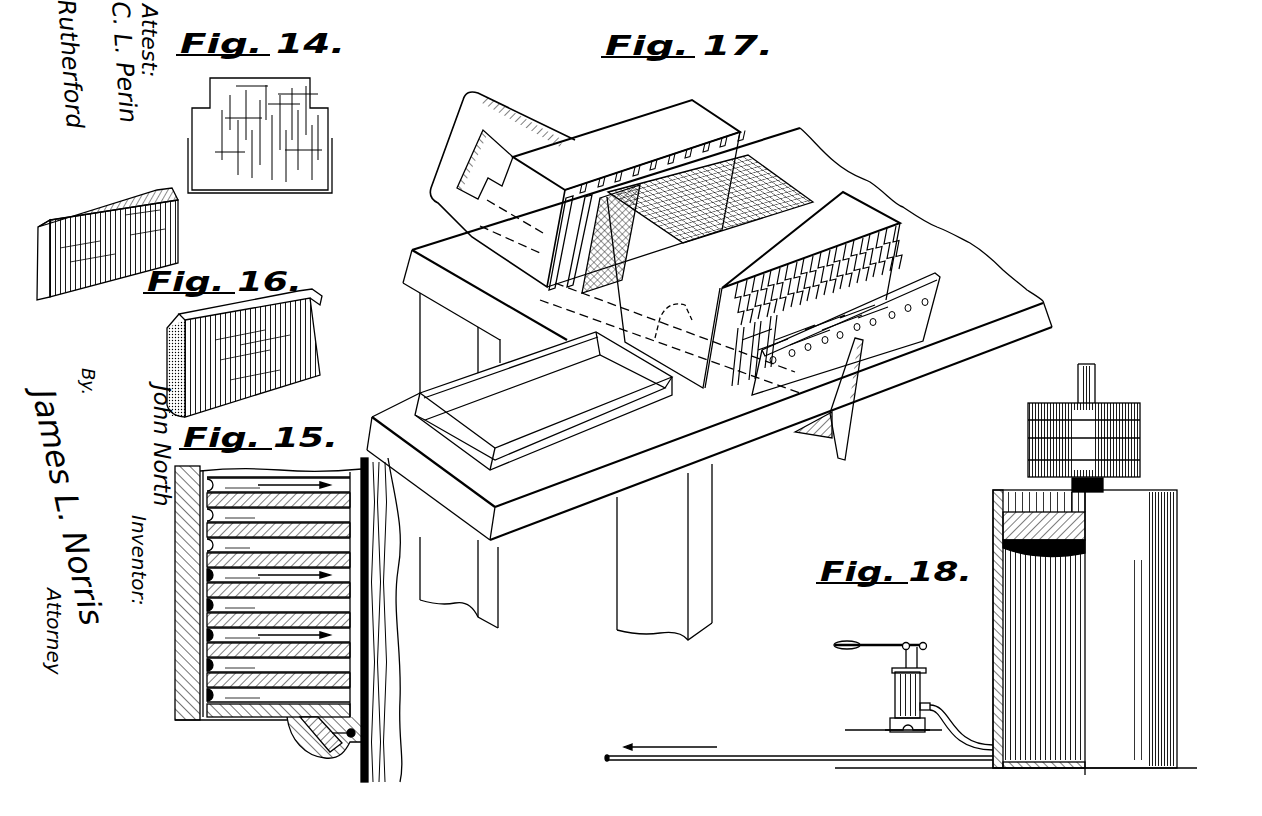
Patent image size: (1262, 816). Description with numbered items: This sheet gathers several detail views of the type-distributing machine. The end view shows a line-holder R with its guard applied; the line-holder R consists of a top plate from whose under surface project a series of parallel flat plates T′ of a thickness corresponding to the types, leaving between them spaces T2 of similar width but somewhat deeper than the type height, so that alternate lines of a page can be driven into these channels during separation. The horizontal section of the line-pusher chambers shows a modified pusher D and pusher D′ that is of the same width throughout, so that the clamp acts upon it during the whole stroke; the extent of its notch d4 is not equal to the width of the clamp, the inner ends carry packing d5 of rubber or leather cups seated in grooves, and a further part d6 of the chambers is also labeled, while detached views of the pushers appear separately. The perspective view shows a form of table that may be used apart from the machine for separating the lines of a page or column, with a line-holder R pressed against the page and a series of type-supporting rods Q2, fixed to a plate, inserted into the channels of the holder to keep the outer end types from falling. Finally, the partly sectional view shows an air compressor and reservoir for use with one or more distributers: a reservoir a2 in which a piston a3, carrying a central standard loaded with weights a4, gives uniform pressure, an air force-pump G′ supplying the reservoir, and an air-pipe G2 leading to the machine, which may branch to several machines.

In FIG. 14, the line-holder R is at (260, 127).
In FIG. 17, the line-holder R is at (706, 244).
In FIG. 14, the parallel flat plates T′ is at (241, 89).
In FIG. 17, the parallel flat plates T′ is at (502, 189).
In FIG. 17, the spaces T2 is at (742, 136).
In FIG. 16, the pusher D is at (244, 353).
In FIG. 14, the pusher D′ is at (107, 244).
In FIG. 15, the pusher D′ is at (278, 591).
In FIG. 14, the notch d4 is at (172, 189).
In FIG. 16, the notch d4 is at (330, 291).
In FIG. 15, the notch d4 is at (361, 577).
In FIG. 16, the packing d5 is at (159, 310).
In FIG. 15, the packing d5 is at (361, 483).
In FIG. 15, the air passage d6 is at (361, 662).
In FIG. 17, the type-supporting rods Q2 is at (846, 334).
In FIG. 18, the reservoir a2 is at (1085, 632).
In FIG. 18, the piston a3 is at (1030, 524).
In FIG. 18, the weights a4 is at (1140, 432).
In FIG. 18, the air force-pump G′ is at (903, 695).
In FIG. 18, the air-pipe G2 is at (799, 747).